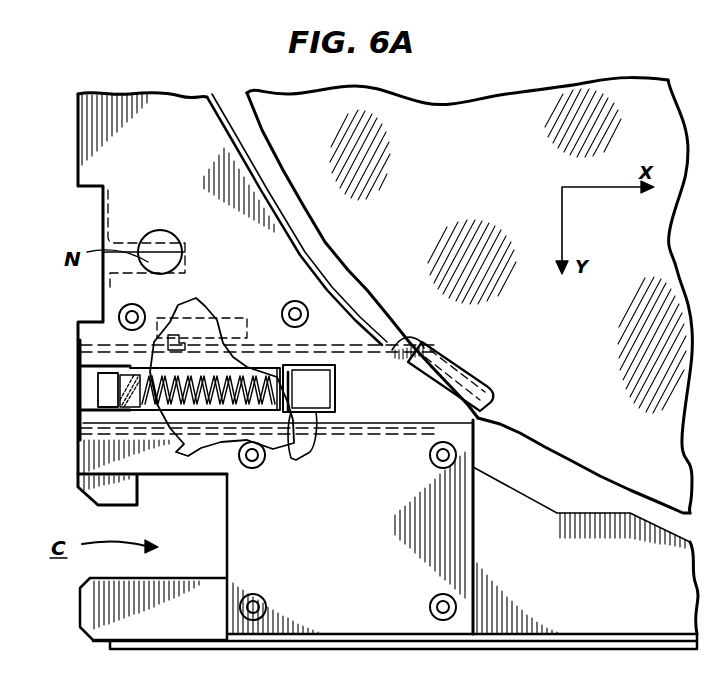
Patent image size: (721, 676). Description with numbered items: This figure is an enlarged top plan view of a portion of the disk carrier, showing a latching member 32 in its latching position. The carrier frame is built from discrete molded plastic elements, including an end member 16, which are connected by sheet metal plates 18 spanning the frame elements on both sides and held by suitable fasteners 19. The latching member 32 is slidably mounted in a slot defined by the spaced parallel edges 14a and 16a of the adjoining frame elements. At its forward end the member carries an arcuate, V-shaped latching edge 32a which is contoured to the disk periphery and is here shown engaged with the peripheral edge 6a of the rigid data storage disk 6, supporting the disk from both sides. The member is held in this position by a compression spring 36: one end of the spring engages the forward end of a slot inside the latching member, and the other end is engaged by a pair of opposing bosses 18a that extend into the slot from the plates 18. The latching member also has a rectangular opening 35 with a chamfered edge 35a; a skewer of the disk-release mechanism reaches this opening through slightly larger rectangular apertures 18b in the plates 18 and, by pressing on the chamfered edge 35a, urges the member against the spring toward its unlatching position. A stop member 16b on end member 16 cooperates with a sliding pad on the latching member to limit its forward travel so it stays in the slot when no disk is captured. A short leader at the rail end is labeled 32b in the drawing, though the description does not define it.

The rigid data storage disk 6 is at (463, 141).
The peripheral edge of disk 6a is at (566, 458).
The edge of frame element 14a is at (402, 430).
The end member 16 is at (78, 184).
The edge of frame element 16a is at (271, 347).
The stop member 16b is at (202, 291).
The sheet metal plate 18 is at (237, 548).
The boss 18a is at (110, 390).
The rectangular aperture 18b is at (304, 366).
The fastener 19 is at (258, 593).
The latching member 32 is at (410, 338).
The V-shaped latching edge 32a is at (469, 352).
The rail end wall 32b is at (80, 374).
The rectangular opening 35 is at (304, 388).
The chamfered edge 35a is at (291, 459).
The compression spring 36 is at (187, 408).